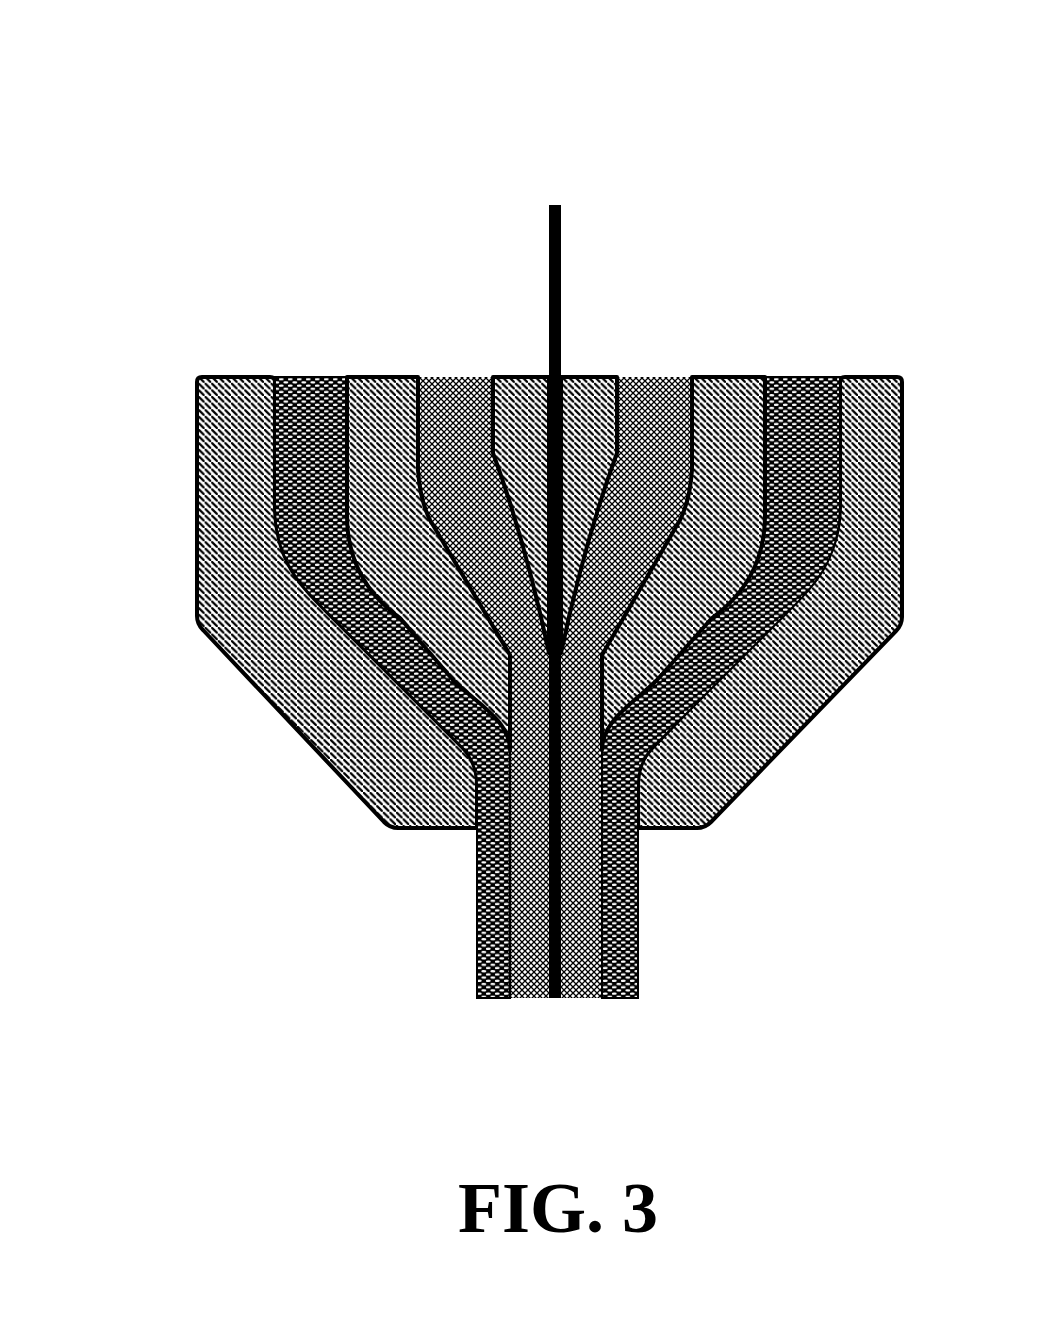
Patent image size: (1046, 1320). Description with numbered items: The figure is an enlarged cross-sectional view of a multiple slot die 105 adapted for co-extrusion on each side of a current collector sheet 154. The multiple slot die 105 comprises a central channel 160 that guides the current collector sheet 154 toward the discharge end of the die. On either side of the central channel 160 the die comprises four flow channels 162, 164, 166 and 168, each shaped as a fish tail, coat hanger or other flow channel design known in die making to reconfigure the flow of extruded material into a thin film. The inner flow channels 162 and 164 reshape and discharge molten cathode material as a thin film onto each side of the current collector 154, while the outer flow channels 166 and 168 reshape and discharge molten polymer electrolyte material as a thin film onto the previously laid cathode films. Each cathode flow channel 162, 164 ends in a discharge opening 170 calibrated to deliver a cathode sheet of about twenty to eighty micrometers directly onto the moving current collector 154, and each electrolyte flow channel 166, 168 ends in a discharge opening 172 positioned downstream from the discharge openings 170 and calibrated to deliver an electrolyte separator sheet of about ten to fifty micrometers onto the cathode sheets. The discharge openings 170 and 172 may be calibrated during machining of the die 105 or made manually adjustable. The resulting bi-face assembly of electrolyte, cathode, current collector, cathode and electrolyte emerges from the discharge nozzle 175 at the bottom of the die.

The multiple slot die 105 is at (242, 87).
The current collector sheet 154 is at (562, 258).
The central channel 160 is at (547, 377).
The flow channel 162 is at (660, 362).
The flow channel 164 is at (455, 362).
The flow channel 166 is at (808, 362).
The flow channel 168 is at (302, 362).
The discharge opening 170 is at (548, 628).
The discharge opening 172 is at (500, 788).
The discharge nozzle 175 is at (480, 830).